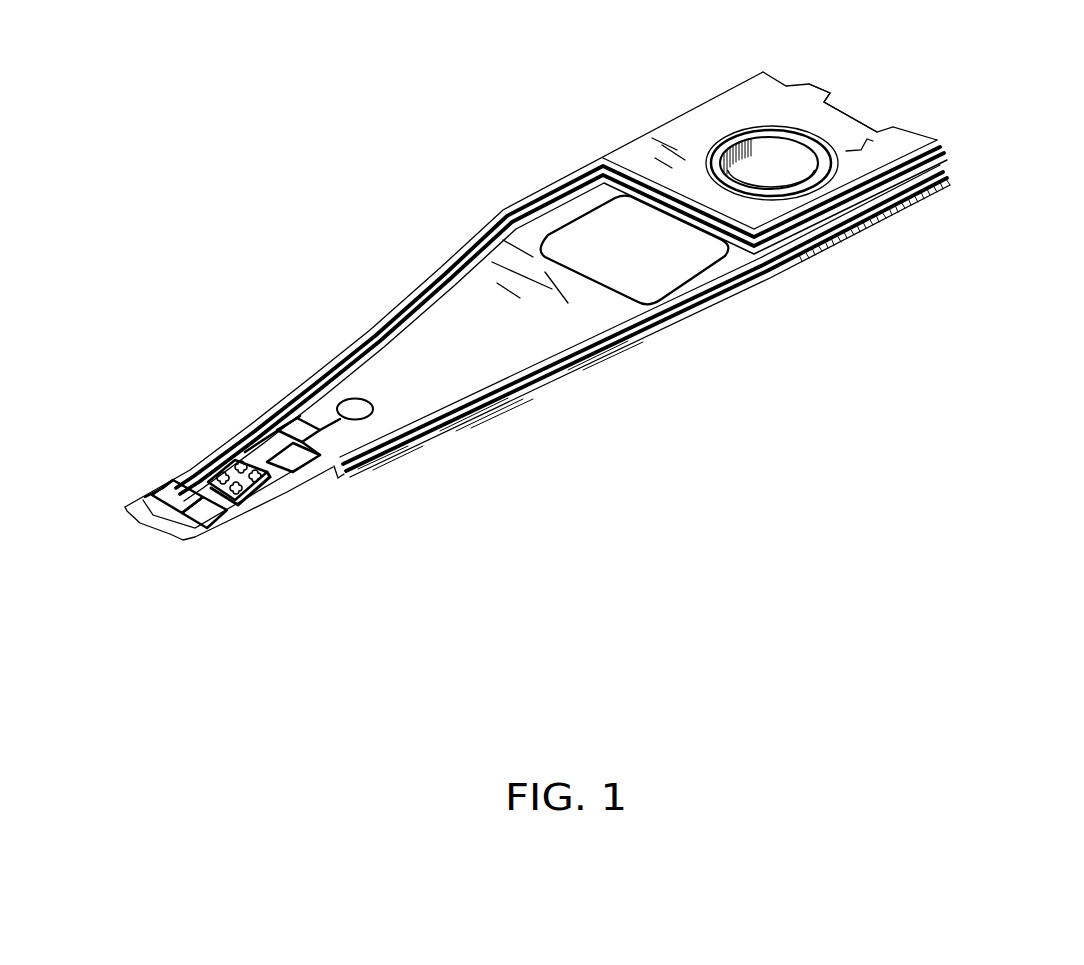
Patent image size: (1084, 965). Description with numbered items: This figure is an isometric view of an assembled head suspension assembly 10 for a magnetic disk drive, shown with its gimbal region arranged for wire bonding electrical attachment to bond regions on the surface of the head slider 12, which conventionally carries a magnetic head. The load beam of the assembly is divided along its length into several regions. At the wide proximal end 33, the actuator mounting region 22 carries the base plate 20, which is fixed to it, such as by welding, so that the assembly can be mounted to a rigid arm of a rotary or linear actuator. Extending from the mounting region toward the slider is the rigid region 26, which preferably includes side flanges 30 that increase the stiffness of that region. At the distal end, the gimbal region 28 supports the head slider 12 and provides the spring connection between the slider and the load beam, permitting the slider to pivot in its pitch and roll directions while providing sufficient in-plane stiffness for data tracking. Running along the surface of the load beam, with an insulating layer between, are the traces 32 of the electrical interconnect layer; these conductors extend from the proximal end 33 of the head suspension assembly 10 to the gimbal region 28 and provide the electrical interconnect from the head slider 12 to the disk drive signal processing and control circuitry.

The head suspension assembly 10 is at (717, 474).
The head slider 12 is at (215, 500).
The base plate 20 is at (770, 137).
The actuator mounting region 22 is at (702, 132).
The rigid region 26 is at (570, 338).
The gimbal region 28 is at (138, 540).
The side flanges 30 is at (397, 449).
The traces 32 is at (506, 208).
The proximal end 33 is at (847, 117).